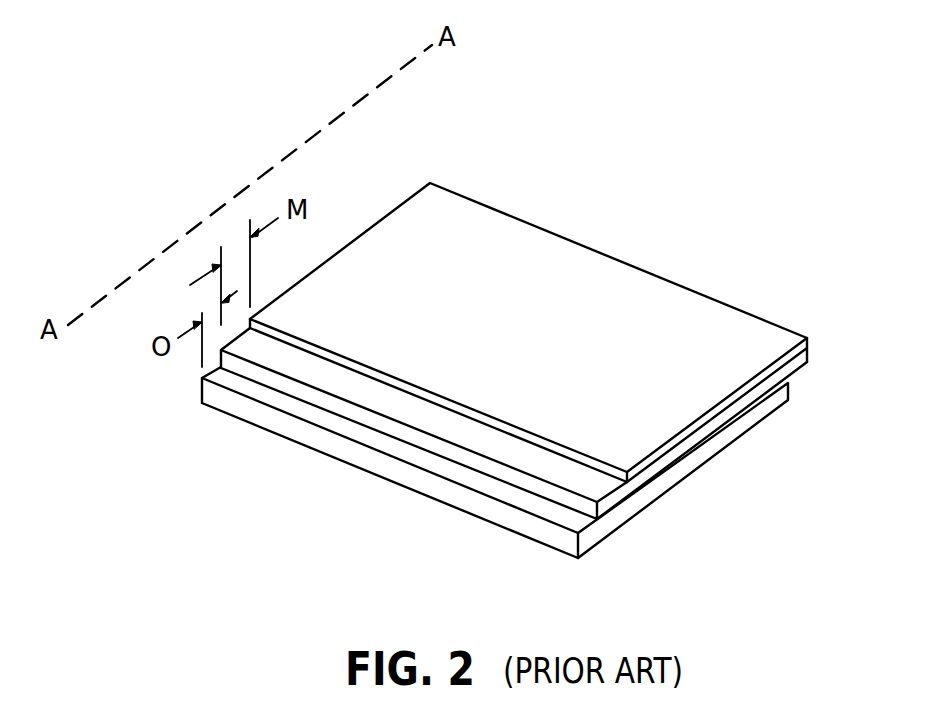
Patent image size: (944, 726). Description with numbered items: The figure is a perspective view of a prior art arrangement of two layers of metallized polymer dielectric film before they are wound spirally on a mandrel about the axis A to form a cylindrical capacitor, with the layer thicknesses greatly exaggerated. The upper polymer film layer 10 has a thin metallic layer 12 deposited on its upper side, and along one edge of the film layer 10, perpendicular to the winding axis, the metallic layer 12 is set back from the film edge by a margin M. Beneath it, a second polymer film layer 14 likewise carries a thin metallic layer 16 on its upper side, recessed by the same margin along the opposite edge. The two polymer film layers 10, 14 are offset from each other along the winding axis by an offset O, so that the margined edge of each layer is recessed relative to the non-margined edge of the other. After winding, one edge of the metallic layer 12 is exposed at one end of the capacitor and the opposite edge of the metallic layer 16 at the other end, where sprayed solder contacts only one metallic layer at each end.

The polymer film layer 10 is at (537, 370).
The metallic layer 12 is at (717, 317).
The polymer film layer 14 is at (457, 498).
The metallic layer 16 is at (400, 448).